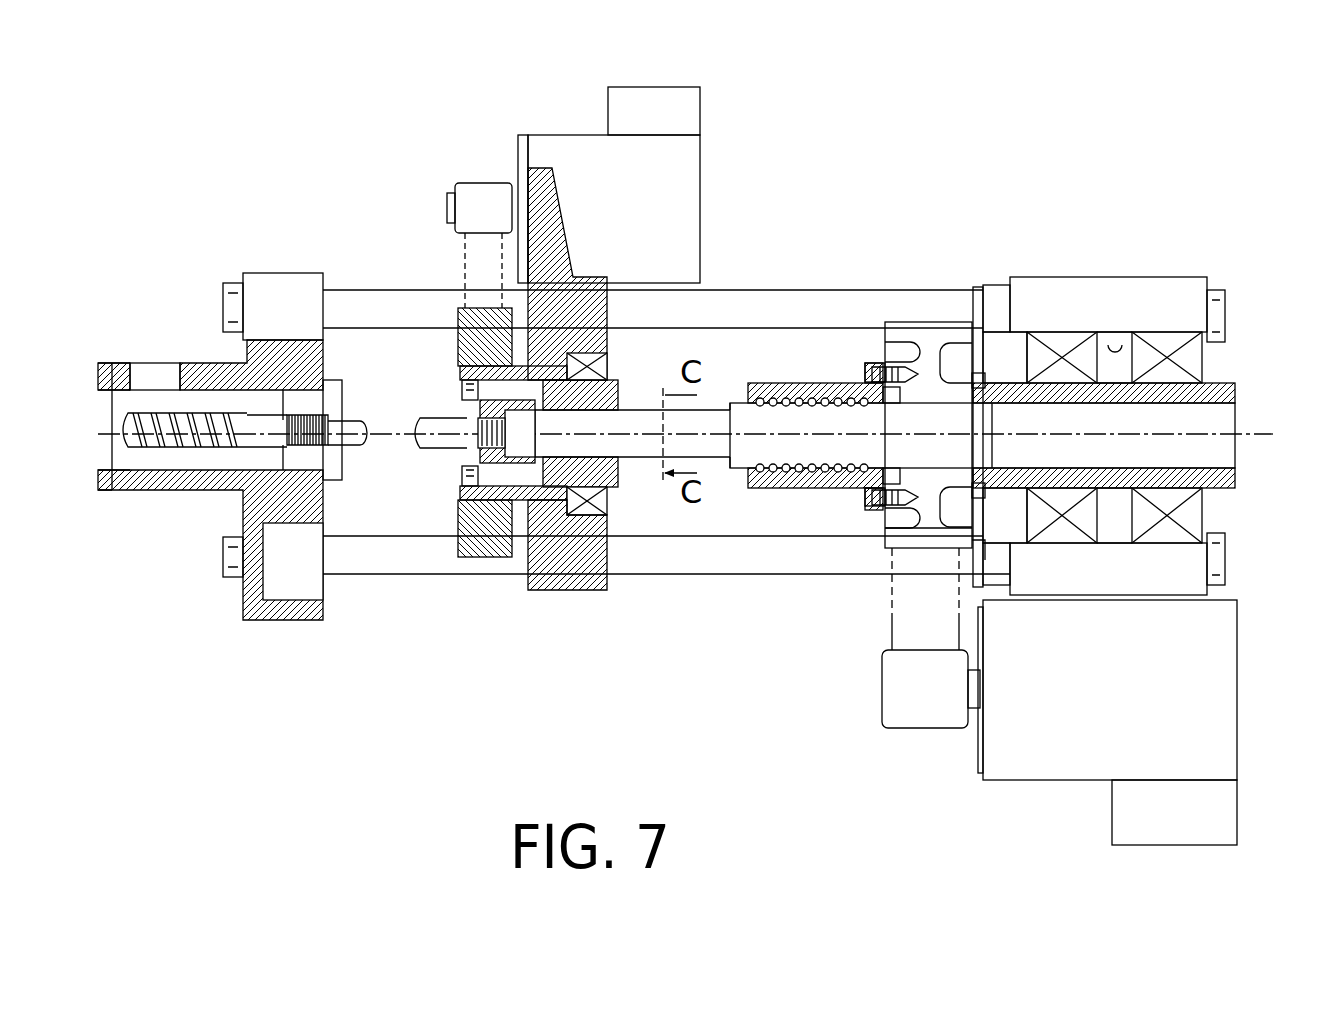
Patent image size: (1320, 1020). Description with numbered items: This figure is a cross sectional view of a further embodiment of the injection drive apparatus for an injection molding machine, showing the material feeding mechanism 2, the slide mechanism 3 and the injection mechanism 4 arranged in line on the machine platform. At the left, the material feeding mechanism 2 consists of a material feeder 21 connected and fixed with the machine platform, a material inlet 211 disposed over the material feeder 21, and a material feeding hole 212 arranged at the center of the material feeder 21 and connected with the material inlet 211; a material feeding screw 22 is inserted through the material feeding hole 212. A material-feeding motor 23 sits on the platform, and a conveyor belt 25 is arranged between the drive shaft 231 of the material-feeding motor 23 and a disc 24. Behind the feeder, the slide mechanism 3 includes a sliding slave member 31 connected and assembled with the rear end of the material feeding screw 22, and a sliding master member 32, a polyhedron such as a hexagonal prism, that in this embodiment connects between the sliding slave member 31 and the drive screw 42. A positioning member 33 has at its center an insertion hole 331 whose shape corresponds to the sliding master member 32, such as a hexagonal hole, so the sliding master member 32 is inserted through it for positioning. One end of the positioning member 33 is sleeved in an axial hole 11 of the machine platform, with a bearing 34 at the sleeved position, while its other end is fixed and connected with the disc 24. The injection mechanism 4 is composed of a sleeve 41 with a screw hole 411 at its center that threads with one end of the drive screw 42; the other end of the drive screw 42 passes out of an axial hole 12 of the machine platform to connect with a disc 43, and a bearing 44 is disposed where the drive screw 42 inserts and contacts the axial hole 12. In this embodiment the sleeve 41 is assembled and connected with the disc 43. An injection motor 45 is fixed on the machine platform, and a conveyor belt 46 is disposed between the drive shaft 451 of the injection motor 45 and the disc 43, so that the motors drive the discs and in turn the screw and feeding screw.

The material feeding mechanism 2 is at (197, 392).
The material feeder 21 is at (232, 368).
The material inlet 211 is at (148, 372).
The material feeding hole 212 is at (147, 462).
The material feeding screw 22 is at (100, 398).
The material-feeding motor 23 is at (665, 172).
The drive shaft 231 is at (480, 190).
The disc 24 is at (458, 312).
The conveyor belt 25 is at (477, 273).
The axial hole 11 is at (607, 363).
The axial hole 12 is at (1113, 348).
The slide mechanism 3 is at (544, 584).
The sliding slave member 31 is at (478, 462).
The sliding master member 32 is at (528, 485).
The positioning member 33 is at (545, 478).
The insertion hole 331 is at (552, 458).
The bearing 34 is at (605, 611).
The injection mechanism 4 is at (1262, 473).
The sleeve 41 is at (808, 385).
The screw hole 411 is at (833, 400).
The drive screw 42 is at (925, 420).
The disc 43 is at (893, 540).
The bearing 44 is at (1197, 358).
The injection motor 45 is at (1047, 742).
The drive shaft 451 is at (925, 710).
The conveyor belt 46 is at (915, 597).